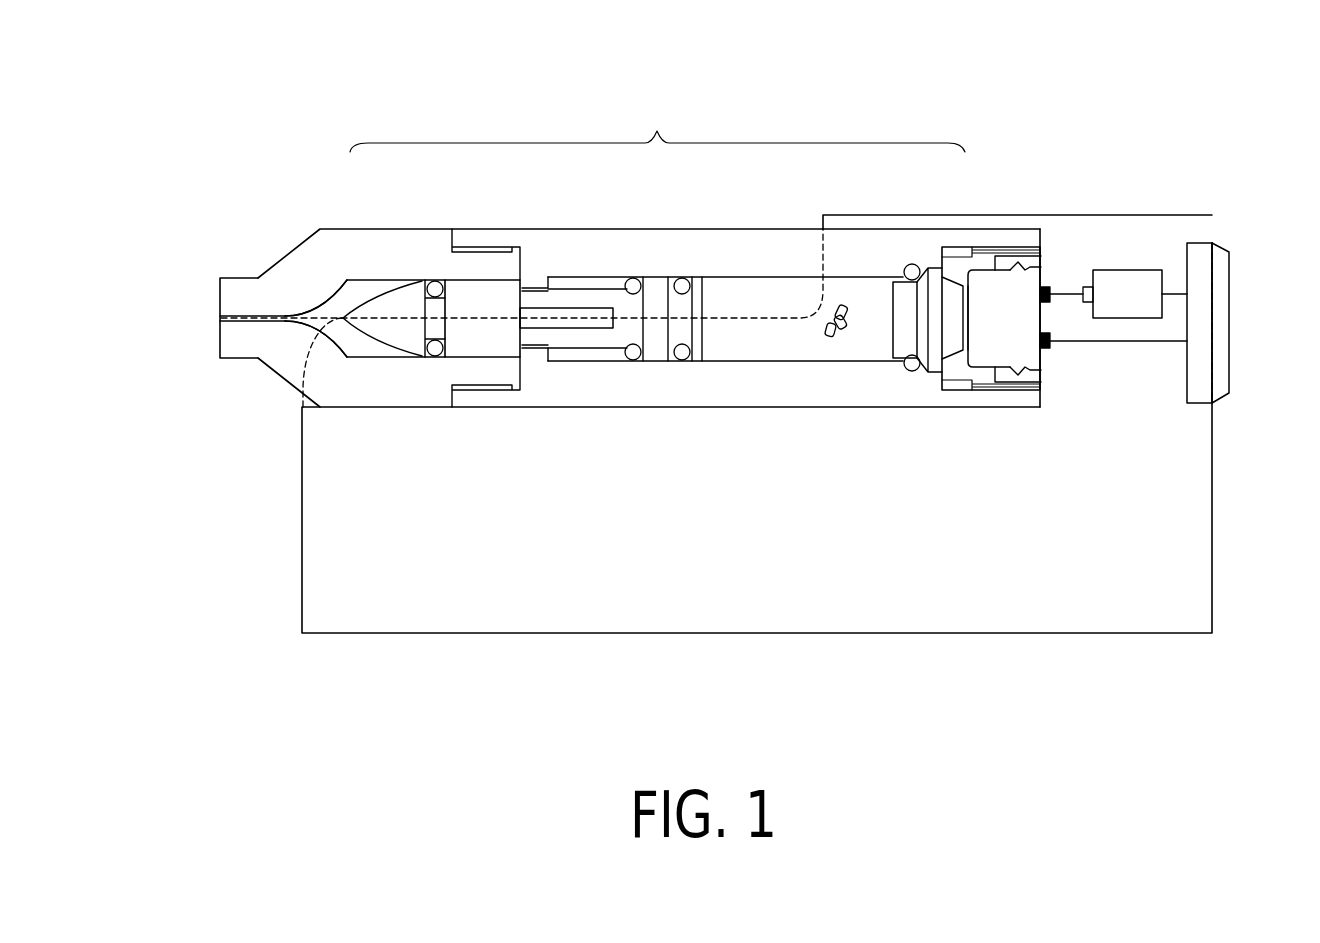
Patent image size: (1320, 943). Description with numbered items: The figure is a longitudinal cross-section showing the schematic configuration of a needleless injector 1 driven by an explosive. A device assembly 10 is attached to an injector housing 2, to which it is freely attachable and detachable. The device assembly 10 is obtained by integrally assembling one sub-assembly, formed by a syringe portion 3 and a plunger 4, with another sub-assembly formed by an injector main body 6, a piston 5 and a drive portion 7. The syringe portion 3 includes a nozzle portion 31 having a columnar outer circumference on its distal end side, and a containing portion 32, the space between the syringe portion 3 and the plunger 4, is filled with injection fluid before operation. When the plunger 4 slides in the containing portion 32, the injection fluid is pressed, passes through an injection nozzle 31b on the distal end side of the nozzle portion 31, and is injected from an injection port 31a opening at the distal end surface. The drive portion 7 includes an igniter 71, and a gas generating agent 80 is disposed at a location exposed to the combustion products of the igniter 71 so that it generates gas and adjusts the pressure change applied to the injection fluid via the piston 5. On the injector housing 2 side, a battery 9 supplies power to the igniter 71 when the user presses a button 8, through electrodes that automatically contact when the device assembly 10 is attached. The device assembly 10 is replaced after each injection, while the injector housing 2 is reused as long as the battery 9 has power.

The injector 1 is at (500, 647).
The injector housing 2 is at (637, 583).
The syringe portion 3 is at (363, 252).
The nozzle portion 31 is at (287, 320).
The injection port 31a is at (227, 319).
The injection nozzle 31b is at (249, 315).
The containing portion 32 is at (363, 343).
The plunger 4 is at (478, 303).
The piston 5 is at (593, 297).
The injector main body 6 is at (772, 247).
The drive portion 7 is at (950, 292).
The igniter 71 is at (902, 335).
The button 8 is at (1222, 287).
The battery 9 is at (1128, 290).
The device assembly 10 is at (645, 93).
The gas generating agent 80 is at (835, 360).